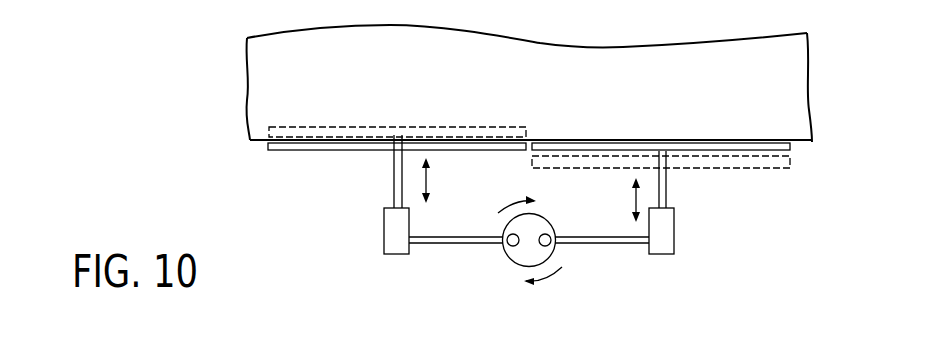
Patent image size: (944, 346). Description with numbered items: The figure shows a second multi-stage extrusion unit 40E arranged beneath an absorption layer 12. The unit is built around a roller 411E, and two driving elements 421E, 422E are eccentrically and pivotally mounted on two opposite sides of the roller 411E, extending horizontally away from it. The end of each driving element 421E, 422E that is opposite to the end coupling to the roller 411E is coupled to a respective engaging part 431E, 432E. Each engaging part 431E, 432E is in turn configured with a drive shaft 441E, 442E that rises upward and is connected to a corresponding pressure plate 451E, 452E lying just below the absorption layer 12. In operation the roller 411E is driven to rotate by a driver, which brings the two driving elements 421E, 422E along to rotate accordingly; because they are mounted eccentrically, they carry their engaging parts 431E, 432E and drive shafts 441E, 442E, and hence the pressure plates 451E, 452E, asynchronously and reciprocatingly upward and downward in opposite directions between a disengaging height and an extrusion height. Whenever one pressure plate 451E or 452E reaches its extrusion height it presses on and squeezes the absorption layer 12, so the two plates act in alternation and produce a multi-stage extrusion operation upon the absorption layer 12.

The absorption layer 12 is at (282, 83).
The second multi-stage extrusion unit 40E is at (347, 285).
The roller 411E is at (515, 257).
The driving element 421E is at (452, 244).
The driving element 422E is at (607, 244).
The engaging part 431E is at (388, 236).
The engaging part 432E is at (668, 230).
The drive shaft 441E is at (393, 168).
The drive shaft 442E is at (665, 183).
The pressure plate 451E is at (280, 151).
The pressure plate 452E is at (727, 148).